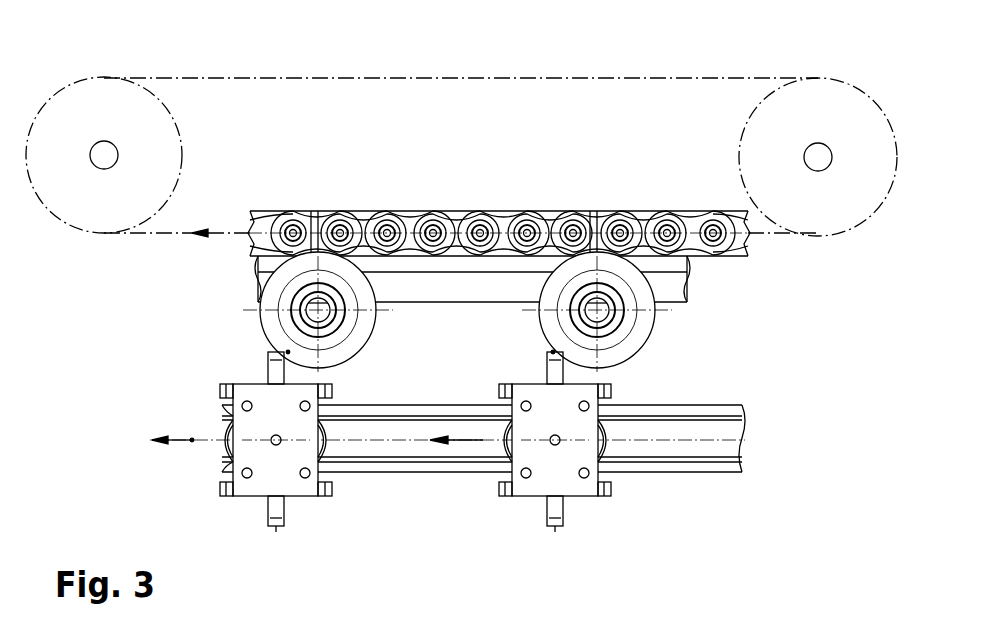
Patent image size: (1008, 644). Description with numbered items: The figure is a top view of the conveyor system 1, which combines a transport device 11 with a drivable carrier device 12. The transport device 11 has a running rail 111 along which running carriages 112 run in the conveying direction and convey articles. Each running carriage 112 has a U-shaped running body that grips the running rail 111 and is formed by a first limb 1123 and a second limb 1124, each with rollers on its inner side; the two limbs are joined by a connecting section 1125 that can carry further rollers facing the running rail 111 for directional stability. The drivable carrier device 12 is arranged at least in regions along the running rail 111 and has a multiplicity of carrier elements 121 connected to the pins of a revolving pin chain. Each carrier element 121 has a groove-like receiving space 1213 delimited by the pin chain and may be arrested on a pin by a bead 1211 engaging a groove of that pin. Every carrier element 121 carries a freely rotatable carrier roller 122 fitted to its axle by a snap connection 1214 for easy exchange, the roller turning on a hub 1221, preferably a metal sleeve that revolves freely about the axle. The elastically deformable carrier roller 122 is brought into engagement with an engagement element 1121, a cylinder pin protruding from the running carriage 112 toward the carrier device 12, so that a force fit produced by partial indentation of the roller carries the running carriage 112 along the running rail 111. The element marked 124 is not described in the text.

The conveyor system 1 is at (105, 58).
The transport device 11 is at (590, 573).
The running rail 111 is at (380, 440).
The running carriage 112 is at (284, 475).
The engagement element 1121 is at (270, 365).
The first limb 1123 is at (242, 505).
The second limb 1124 is at (238, 380).
The connecting section 1125 is at (253, 434).
The drivable carrier device 12 is at (188, 52).
The carrier element 121 is at (316, 190).
The bead 1211 is at (561, 205).
The receiving space 1213 is at (600, 295).
The snap connection 1214 is at (298, 288).
The carrier roller 122 is at (636, 282).
The hub 1221 is at (632, 322).
The guide bar 124 is at (412, 211).